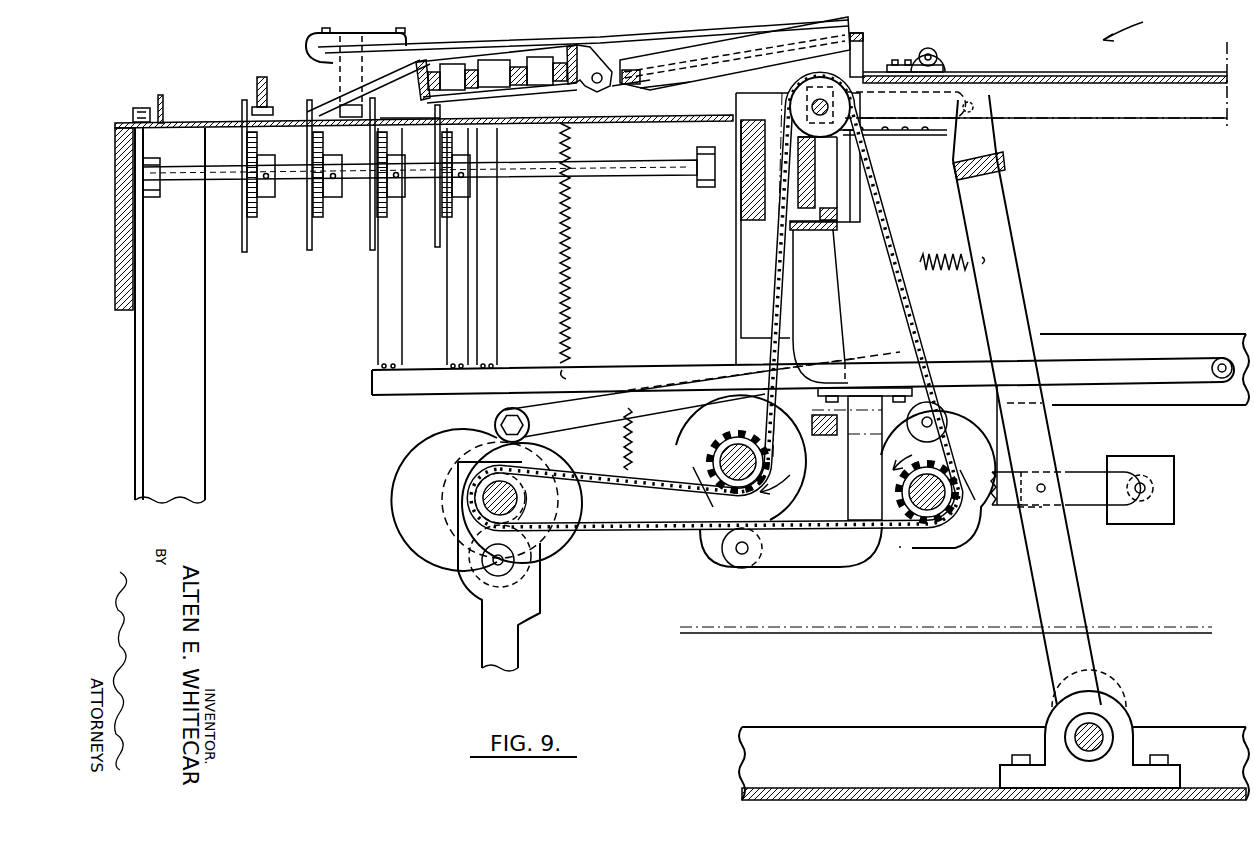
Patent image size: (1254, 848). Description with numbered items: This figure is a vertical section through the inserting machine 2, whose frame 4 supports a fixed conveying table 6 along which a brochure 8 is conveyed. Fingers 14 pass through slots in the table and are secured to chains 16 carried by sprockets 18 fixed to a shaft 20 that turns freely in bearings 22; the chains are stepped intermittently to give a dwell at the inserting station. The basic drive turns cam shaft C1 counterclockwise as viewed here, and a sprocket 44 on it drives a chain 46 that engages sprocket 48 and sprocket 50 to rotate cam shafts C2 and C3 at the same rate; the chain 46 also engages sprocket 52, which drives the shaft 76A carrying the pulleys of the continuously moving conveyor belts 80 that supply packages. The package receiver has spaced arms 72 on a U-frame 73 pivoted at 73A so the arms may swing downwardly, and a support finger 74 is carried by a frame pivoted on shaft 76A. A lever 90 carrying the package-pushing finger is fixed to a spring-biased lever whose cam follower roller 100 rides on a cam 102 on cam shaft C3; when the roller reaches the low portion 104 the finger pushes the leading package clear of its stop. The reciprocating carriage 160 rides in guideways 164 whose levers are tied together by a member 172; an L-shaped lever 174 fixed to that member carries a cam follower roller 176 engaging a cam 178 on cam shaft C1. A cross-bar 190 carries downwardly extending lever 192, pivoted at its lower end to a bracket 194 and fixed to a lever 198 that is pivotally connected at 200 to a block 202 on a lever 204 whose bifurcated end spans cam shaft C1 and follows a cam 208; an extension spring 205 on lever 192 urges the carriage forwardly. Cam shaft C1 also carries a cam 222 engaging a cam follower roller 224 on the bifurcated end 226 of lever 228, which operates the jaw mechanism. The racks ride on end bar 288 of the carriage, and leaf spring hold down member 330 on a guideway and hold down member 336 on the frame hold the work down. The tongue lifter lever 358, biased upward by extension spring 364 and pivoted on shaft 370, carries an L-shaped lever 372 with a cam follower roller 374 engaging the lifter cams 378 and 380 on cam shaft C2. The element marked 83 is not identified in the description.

The inserting machine 2 is at (1128, 25).
The frame 4 is at (180, 443).
The conveying table 6 is at (194, 122).
The brochure 8 is at (410, 117).
The fingers 14 is at (242, 103).
The chains 16 is at (257, 147).
The sprockets 18 is at (257, 190).
The shaft 20 is at (186, 176).
The bearings 22 is at (152, 158).
The sprocket 44 is at (530, 502).
The chain 46 is at (637, 470).
The sprocket 48 is at (722, 445).
The sprocket 50 is at (940, 470).
The sprocket 52 is at (848, 90).
The spaced arms 72 is at (700, 66).
The U-frame 73 is at (622, 84).
The pivot 73A is at (940, 45).
The support finger 74 is at (660, 96).
The shaft 76A is at (850, 102).
The conveyor belts 80 is at (990, 76).
The rail member 83 is at (1140, 84).
The lever 90 is at (838, 436).
The cam follower roller 100 is at (940, 420).
The cam 102 is at (912, 548).
The low portion 104 is at (978, 525).
The reciprocating carriage 160 is at (580, 47).
The guideways 164 is at (668, 33).
The member 172 is at (840, 228).
The L-shaped lever 174 is at (828, 290).
The cam follower roller 176 is at (496, 420).
The cam 178 is at (435, 452).
The cross-bar 190 is at (1006, 160).
The lever 192 is at (1025, 278).
The bracket 194 is at (1103, 726).
The lever 198 is at (1104, 505).
The pivotal connection 200 is at (1160, 491).
The block 202 is at (1172, 481).
The lever 204 is at (1000, 508).
The extension spring 205 is at (936, 254).
The cam 208 is at (410, 520).
The cam 222 is at (555, 540).
The cam follower roller 224 is at (530, 570).
The bifurcated end 226 is at (472, 590).
The lever 228 is at (482, 648).
The end bar 288 is at (505, 62).
The leaf spring hold down member 330 is at (335, 90).
The leaf spring hold down member 336 is at (310, 52).
The lever 358 is at (610, 372).
The extension spring 364 is at (566, 294).
The shaft 370 is at (1218, 380).
The L-shaped lever 372 is at (858, 388).
The cam follower roller 374 is at (742, 570).
The cam 378 is at (690, 520).
The cam 380 is at (708, 527).
The cam shaft C1 is at (555, 470).
The cam shaft C2 is at (800, 462).
The cam shaft C3 is at (960, 470).